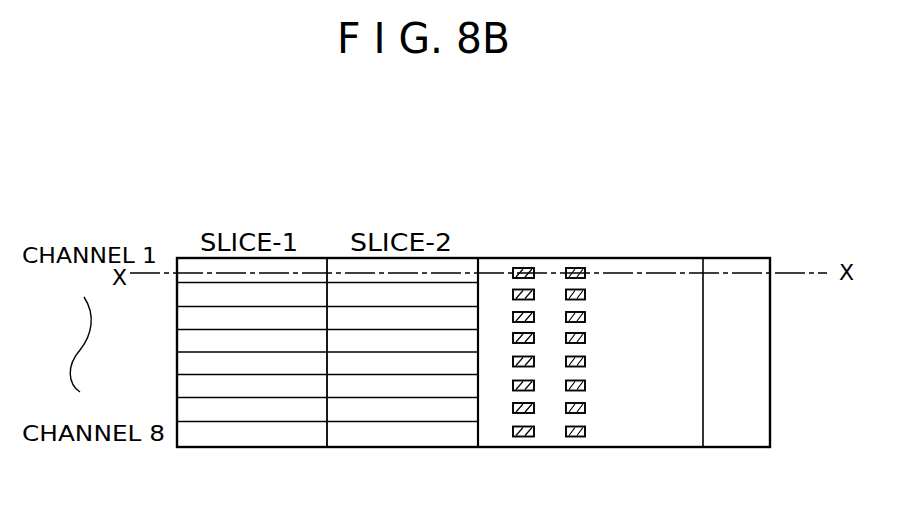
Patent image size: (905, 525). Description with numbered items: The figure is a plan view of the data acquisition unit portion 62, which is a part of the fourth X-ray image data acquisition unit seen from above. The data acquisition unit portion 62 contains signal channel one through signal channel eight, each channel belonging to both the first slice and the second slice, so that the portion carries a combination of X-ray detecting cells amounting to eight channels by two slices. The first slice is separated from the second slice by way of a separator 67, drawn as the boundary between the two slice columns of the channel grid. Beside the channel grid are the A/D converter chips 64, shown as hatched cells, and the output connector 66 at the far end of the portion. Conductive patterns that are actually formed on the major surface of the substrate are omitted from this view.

The data acquisition unit portion 62 is at (780, 389).
The A/D converter chips 64 is at (533, 262).
The output connector 66 is at (752, 455).
The separator 67 is at (330, 264).